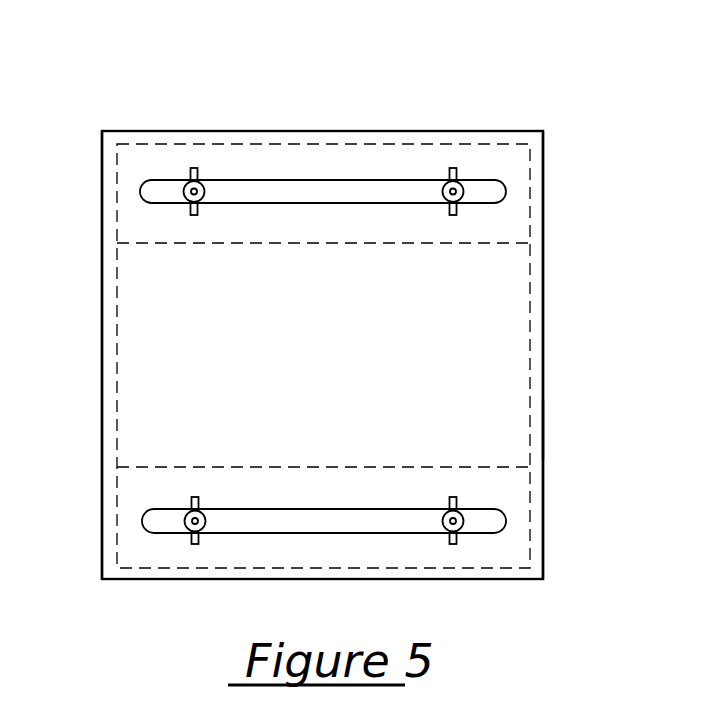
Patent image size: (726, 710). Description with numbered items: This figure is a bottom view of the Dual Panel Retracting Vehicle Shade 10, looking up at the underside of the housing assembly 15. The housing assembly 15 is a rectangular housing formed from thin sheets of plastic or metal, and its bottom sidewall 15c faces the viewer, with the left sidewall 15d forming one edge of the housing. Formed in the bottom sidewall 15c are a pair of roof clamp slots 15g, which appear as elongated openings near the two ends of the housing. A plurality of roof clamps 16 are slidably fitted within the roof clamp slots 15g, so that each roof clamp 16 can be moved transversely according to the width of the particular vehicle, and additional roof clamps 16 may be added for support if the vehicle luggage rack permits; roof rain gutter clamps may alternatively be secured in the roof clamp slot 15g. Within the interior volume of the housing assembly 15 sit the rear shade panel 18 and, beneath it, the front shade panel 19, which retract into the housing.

The Dual Panel Retracting Vehicle Shade 10 is at (426, 98).
The housing assembly 15 is at (256, 130).
The bottom sidewall 15c is at (542, 290).
The left sidewall 15d is at (545, 428).
The roof clamp slot 15g is at (343, 188).
The roof clamp 16 is at (185, 605).
The rear shade panel 18 is at (500, 357).
The front shade panel 19 is at (523, 507).